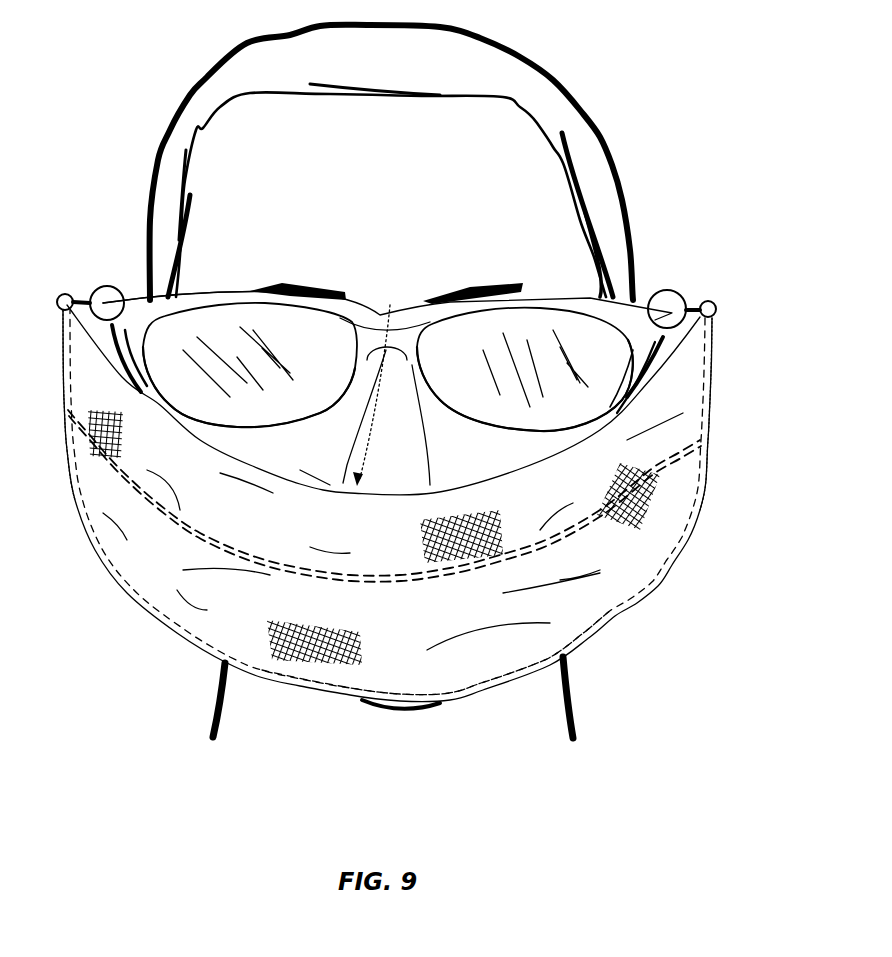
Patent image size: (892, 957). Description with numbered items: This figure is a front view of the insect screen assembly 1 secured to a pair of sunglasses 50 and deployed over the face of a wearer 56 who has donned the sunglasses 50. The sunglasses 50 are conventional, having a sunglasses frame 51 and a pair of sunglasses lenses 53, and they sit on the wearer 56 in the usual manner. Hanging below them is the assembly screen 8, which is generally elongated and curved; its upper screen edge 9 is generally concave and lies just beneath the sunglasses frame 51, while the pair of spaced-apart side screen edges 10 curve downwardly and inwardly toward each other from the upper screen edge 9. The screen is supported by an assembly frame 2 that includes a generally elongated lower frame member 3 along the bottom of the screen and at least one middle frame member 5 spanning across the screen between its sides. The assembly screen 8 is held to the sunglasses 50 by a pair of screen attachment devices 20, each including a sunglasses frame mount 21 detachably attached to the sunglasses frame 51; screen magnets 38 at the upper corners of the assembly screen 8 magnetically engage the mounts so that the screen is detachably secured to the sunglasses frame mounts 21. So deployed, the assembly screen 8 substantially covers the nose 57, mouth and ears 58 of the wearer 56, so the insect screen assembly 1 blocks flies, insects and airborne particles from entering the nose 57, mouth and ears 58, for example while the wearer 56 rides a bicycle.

The insect screen assembly 1 is at (741, 232).
The assembly frame 2 is at (170, 648).
The lower frame member 3 is at (397, 694).
The middle frame member 5 is at (276, 544).
The assembly screen 8 is at (390, 305).
The upper screen edge 9 is at (302, 482).
The side screen edges 10 is at (708, 398).
The screen attachment devices 20 is at (101, 240).
The sunglasses frame mounts 21 is at (107, 292).
The screen magnets 38 is at (65, 295).
The sunglasses 50 is at (366, 288).
The sunglasses frame 51 is at (212, 300).
The sunglasses lenses 53 is at (277, 413).
The wearer 56 is at (612, 131).
The nose 57 is at (402, 425).
The ears 58 is at (122, 373).